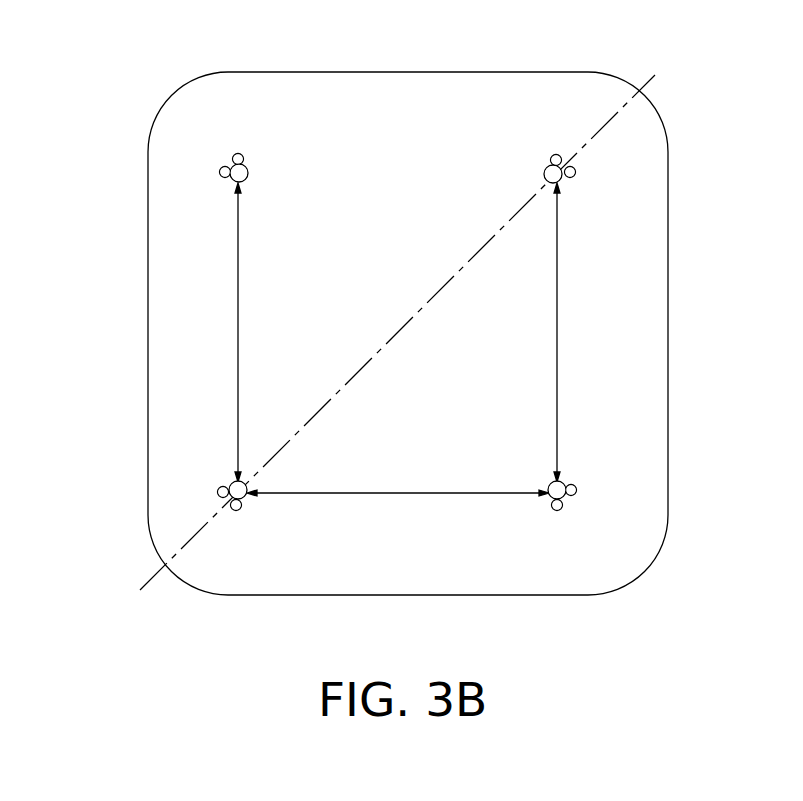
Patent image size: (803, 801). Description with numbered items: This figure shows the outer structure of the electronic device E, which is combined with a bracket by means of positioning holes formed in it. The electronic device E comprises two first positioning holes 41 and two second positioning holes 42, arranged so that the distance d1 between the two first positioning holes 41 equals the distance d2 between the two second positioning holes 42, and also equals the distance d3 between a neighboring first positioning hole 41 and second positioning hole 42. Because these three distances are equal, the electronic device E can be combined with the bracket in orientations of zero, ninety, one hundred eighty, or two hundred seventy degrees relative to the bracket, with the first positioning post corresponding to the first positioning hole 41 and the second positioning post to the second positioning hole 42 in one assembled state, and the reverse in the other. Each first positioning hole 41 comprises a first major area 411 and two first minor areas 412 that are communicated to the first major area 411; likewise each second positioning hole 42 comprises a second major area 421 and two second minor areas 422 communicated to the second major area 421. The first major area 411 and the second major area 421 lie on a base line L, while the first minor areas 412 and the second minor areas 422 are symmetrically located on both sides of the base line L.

The electronic device E is at (122, 43).
The base line L is at (150, 580).
The first positioning hole 41 is at (130, 270).
The first major area 411 is at (234, 483).
The first minor area 412 is at (222, 493).
The second positioning hole 42 is at (664, 399).
The second major area 421 is at (576, 171).
The second minor area 422 is at (562, 183).
The distance between the two first positioning holes d1 is at (223, 332).
The distance between the two second positioning holes d2 is at (542, 332).
The distance between neighboring first and second positioning holes d3 is at (398, 481).